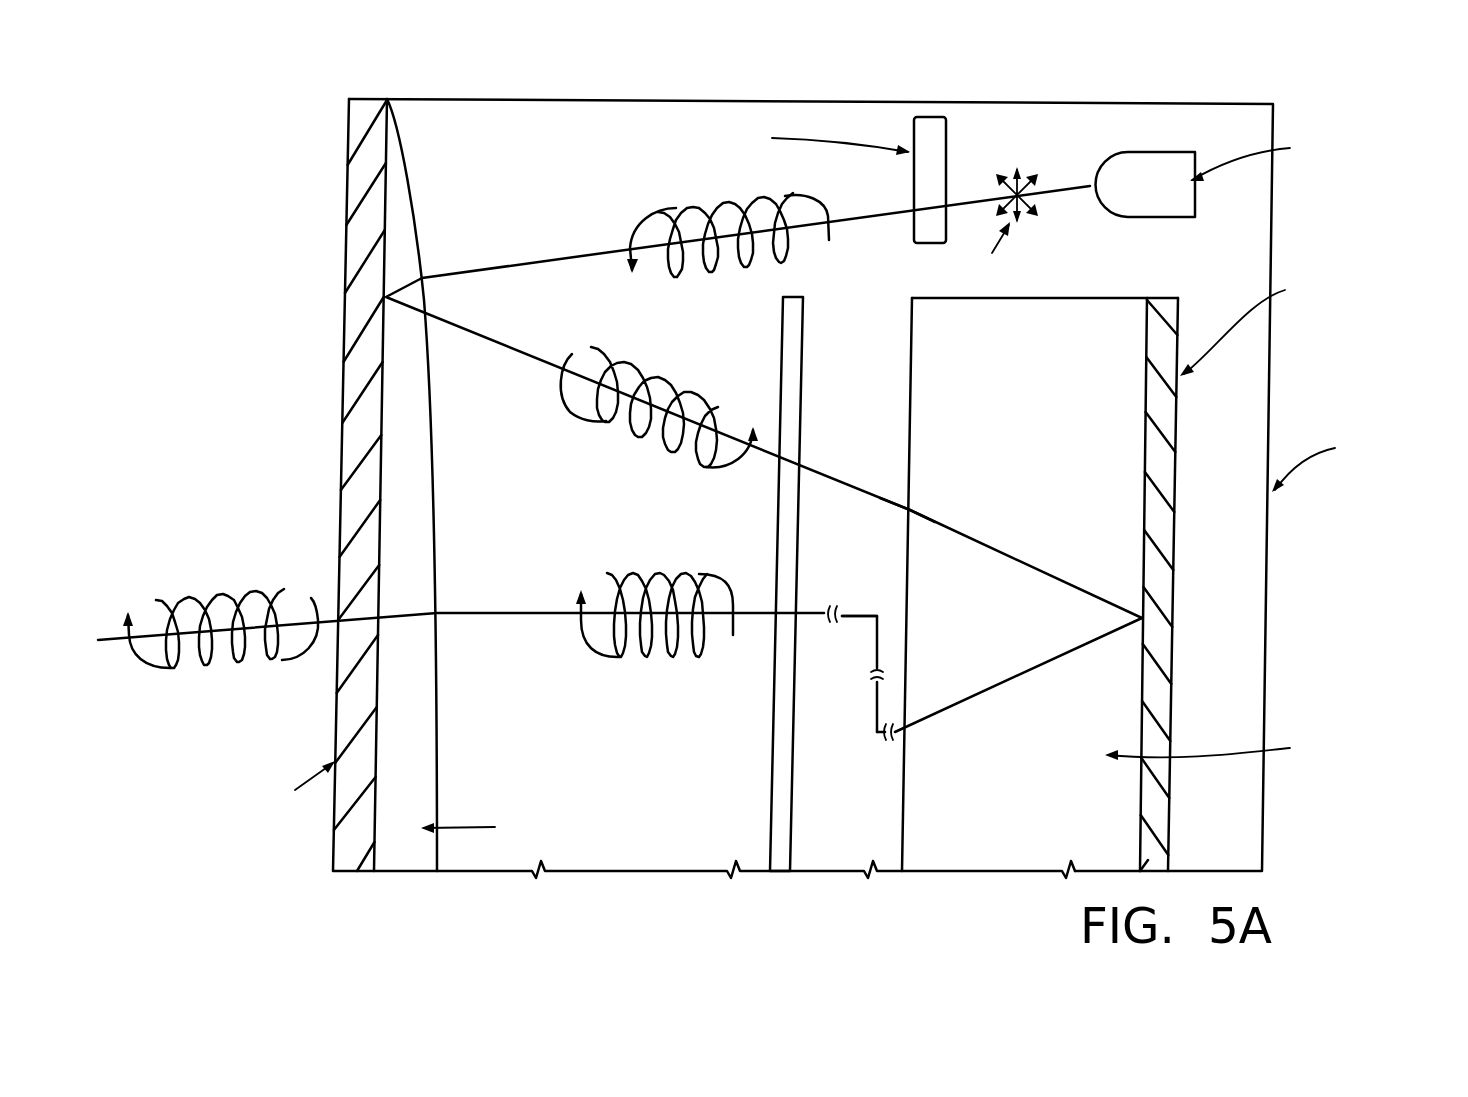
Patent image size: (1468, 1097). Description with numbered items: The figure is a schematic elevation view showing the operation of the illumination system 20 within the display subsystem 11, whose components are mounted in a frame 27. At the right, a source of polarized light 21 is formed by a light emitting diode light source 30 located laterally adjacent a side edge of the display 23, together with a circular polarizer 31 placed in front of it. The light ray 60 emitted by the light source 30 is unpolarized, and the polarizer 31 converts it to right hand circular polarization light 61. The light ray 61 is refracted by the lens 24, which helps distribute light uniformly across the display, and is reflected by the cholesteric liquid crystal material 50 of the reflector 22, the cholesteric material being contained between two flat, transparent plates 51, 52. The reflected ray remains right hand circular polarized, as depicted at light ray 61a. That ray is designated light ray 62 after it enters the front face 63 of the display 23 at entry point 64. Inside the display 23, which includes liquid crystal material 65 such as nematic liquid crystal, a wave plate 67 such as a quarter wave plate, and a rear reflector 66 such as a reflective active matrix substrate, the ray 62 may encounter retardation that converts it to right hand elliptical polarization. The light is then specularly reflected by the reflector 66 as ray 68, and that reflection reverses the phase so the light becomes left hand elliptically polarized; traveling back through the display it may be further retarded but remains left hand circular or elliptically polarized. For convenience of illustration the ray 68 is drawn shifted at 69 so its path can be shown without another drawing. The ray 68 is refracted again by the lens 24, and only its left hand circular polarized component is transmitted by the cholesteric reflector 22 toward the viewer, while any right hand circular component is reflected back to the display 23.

The display subsystem 11 is at (368, 80).
The illumination system 20 is at (490, 112).
The source of polarized light 21 is at (872, 122).
The reflector 22 is at (256, 487).
The display 23 is at (1115, 582).
The lens 24 is at (420, 205).
The frame 27 is at (604, 100).
The light source 30 is at (1155, 152).
The circular polarizer 31 is at (929, 120).
The cholesteric liquid crystal material 50 is at (352, 200).
The plate 51 is at (346, 238).
The plate 52 is at (385, 270).
The light ray 60 is at (1068, 184).
The right hand circular polarization light 61 is at (888, 213).
The reflected light ray 61a is at (525, 355).
The light ray 62 is at (952, 540).
The front face 63 is at (908, 358).
The entry point 64 is at (905, 508).
The liquid crystal material 65 is at (925, 395).
The reflector 66 is at (1150, 330).
The wave plate 67 is at (777, 832).
The ray 68 is at (745, 618).
The shift 69 is at (866, 692).